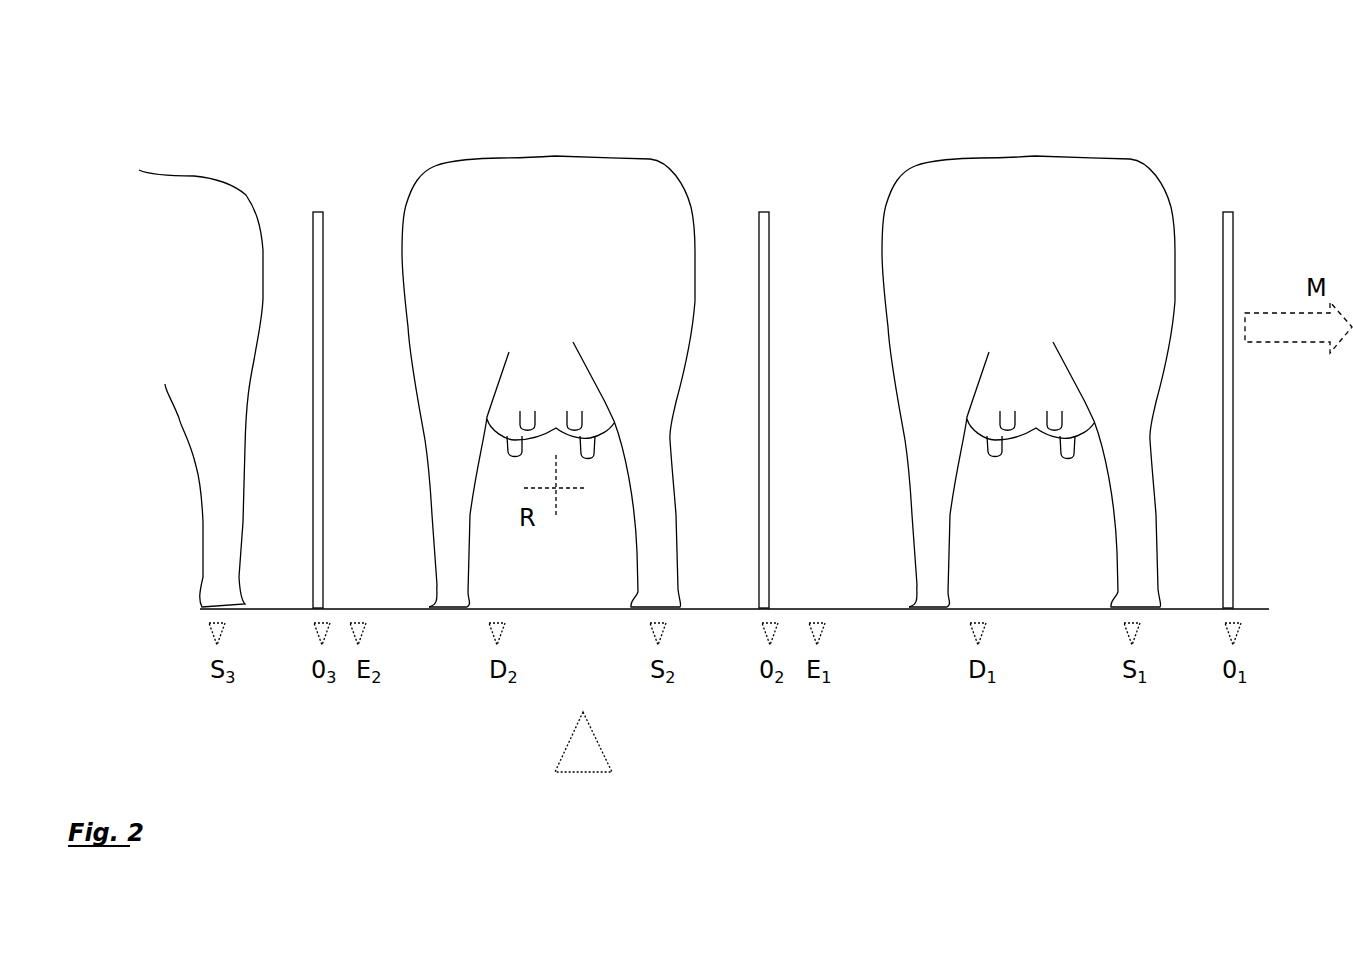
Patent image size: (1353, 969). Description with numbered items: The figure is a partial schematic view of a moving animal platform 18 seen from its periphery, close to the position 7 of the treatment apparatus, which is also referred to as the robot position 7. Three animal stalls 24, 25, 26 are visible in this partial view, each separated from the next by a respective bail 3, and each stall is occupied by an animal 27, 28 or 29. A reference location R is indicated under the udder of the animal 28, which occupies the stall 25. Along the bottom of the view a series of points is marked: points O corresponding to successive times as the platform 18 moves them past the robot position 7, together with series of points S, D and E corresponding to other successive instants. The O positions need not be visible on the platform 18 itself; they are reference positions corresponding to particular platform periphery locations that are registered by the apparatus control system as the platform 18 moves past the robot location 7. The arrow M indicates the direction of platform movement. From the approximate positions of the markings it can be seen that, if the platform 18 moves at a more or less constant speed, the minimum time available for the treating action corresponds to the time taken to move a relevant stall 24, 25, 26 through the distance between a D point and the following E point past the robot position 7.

The bail 3 is at (317, 208).
The robot position 7 is at (570, 740).
The platform 18 is at (1270, 580).
The animal stall 24 is at (824, 205).
The animal stall 25 is at (368, 200).
The animal stall 26 is at (276, 210).
The animal 27 is at (1003, 153).
The animal 28 is at (557, 153).
The animal 29 is at (158, 170).